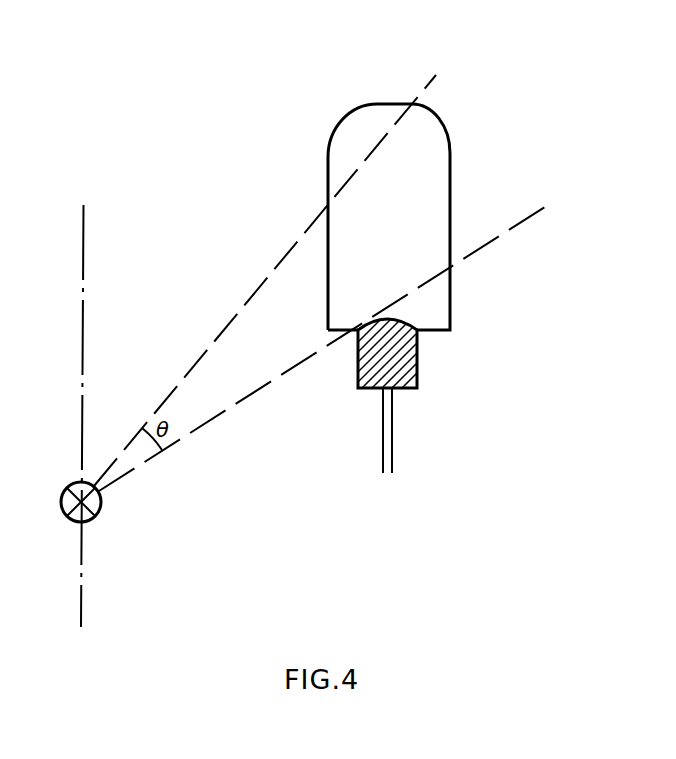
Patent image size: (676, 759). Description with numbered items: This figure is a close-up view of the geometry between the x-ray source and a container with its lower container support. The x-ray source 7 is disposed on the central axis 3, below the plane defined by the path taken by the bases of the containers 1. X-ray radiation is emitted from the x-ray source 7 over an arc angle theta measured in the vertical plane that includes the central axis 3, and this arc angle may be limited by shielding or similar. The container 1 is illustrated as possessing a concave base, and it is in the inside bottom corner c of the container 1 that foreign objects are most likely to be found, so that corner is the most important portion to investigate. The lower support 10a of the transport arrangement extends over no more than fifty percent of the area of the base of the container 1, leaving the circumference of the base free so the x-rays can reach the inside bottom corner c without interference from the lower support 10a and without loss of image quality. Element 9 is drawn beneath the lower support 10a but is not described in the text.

The container 1 is at (450, 184).
The central axis 3 is at (84, 223).
The x-ray source 7 is at (64, 515).
The conduit / tube 9 is at (392, 440).
The lower support 10a is at (417, 362).